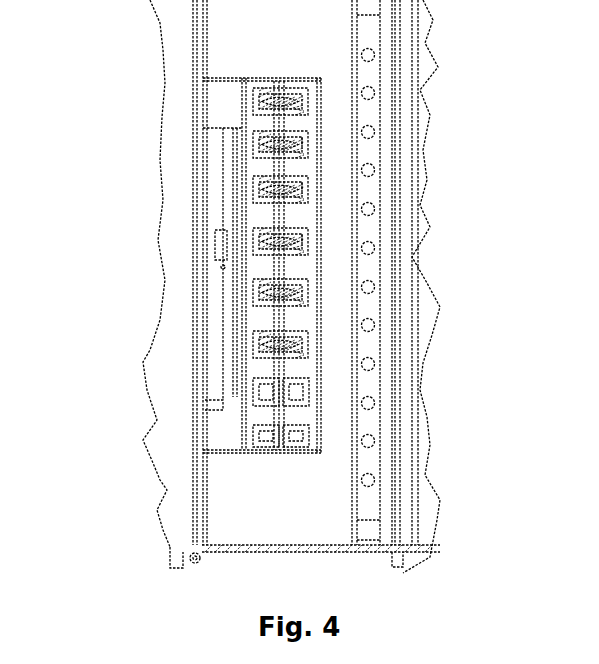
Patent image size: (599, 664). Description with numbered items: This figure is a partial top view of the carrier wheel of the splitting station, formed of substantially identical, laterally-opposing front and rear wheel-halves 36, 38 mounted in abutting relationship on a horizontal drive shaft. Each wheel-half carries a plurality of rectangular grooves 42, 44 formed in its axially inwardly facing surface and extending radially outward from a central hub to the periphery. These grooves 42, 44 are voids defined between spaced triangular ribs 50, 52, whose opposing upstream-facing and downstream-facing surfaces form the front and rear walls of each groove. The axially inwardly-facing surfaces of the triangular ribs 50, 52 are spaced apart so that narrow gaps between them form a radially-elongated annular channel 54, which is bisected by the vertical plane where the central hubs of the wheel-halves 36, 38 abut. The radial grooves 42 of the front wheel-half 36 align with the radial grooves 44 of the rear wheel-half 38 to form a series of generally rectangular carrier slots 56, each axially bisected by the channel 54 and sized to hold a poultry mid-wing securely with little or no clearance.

The front wheel-half 36 is at (320, 117).
The rear wheel-half 38 is at (243, 118).
The rectangular grooves 42 is at (305, 143).
The rectangular grooves 44 is at (263, 190).
The triangular ribs 50 is at (297, 368).
The triangular ribs 52 is at (267, 265).
The channel 54 is at (278, 405).
The carrier slots 56 is at (295, 390).